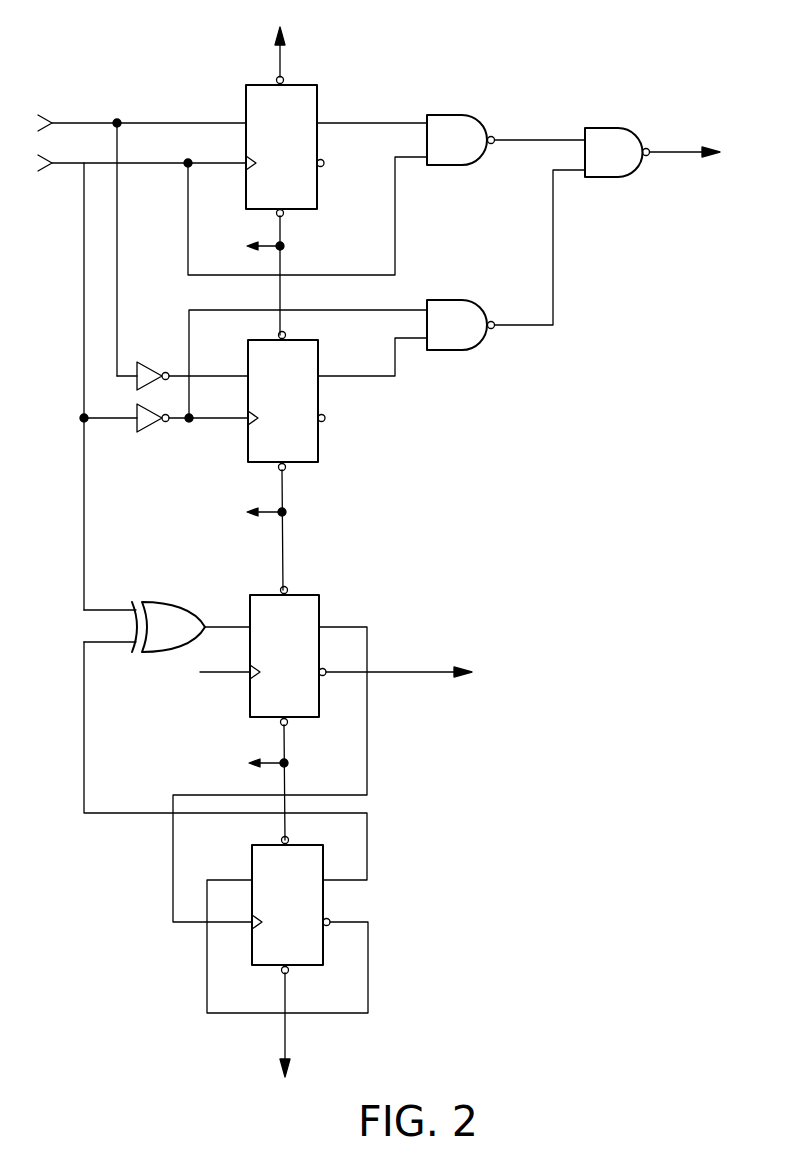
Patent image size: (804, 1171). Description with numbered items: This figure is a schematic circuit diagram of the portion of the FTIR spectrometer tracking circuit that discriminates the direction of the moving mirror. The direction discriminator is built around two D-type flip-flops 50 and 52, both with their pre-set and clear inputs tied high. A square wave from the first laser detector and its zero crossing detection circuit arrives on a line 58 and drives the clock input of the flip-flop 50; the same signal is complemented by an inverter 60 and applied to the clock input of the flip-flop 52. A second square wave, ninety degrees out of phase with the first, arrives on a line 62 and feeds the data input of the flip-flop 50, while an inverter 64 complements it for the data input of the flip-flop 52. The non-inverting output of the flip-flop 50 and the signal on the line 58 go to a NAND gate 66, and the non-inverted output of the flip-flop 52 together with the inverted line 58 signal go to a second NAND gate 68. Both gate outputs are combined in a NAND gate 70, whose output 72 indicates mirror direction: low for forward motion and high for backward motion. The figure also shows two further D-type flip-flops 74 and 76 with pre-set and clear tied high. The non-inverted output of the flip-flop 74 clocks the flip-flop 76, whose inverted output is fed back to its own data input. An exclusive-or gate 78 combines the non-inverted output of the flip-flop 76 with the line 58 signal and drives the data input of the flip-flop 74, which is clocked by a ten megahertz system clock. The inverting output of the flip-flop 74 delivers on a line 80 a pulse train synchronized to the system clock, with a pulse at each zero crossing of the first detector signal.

The D-type flip-flop 50 is at (303, 85).
The D-type flip-flop 52 is at (306, 463).
The line 58 is at (64, 168).
The inverter 60 is at (160, 432).
The line 62 is at (77, 121).
The inverter 64 is at (151, 362).
The NAND gate 66 is at (451, 140).
The second NAND gate 68 is at (506, 260).
The NAND gate 70 is at (617, 152).
The output line 72 is at (668, 150).
The D-type flip-flop 74 is at (306, 595).
The D-type flip-flop 76 is at (325, 901).
The exclusive-or gate 78 is at (225, 741).
The line 80 is at (424, 668).